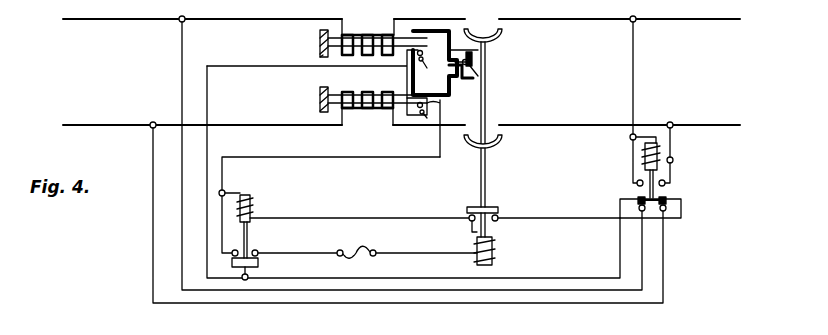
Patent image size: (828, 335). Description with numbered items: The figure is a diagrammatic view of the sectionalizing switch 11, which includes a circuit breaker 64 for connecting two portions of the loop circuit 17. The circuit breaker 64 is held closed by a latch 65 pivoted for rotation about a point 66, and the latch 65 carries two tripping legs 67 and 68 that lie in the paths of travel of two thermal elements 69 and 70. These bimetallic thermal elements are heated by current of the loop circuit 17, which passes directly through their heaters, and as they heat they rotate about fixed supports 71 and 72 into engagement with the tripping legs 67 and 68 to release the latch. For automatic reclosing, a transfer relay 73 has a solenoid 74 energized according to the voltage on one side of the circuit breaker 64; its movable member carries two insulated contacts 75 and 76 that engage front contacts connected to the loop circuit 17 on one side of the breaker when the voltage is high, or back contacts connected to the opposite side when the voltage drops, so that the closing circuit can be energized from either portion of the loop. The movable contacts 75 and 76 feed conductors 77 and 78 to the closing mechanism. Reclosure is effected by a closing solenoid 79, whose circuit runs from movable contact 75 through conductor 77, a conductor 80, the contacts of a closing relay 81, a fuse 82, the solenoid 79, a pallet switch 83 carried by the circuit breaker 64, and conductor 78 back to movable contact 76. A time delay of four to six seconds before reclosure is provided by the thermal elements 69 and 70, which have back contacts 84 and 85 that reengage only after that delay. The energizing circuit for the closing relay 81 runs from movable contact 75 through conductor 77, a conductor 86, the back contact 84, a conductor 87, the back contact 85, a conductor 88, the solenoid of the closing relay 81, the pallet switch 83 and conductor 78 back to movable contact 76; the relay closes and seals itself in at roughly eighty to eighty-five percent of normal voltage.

The sectionalizing switch 11 is at (434, 193).
The loop circuit 17 is at (135, 19).
The circuit breaker 64 is at (486, 92).
The latch 65 is at (480, 50).
The pivot point 66 is at (475, 63).
The tripping leg 67 is at (418, 31).
The tripping leg 68 is at (441, 100).
The thermal element 69 is at (350, 37).
The thermal element 70 is at (348, 108).
The fixed support 71 is at (320, 42).
The fixed support 72 is at (320, 98).
The transfer relay 73 is at (699, 154).
The solenoid 74 is at (645, 147).
The movable contact 75 is at (638, 198).
The movable contact 76 is at (667, 198).
The conductor 77 is at (620, 203).
The conductor 78 is at (604, 218).
The closing solenoid 79 is at (494, 251).
The conductor 80 is at (258, 265).
The closing relay 81 is at (258, 189).
The fuse 82 is at (364, 263).
The pallet switch 83 is at (500, 209).
The back contact 84 is at (424, 70).
The back contact 85 is at (425, 118).
The conductor 86 is at (207, 141).
The conductor 87 is at (407, 74).
The conductor 88 is at (390, 155).